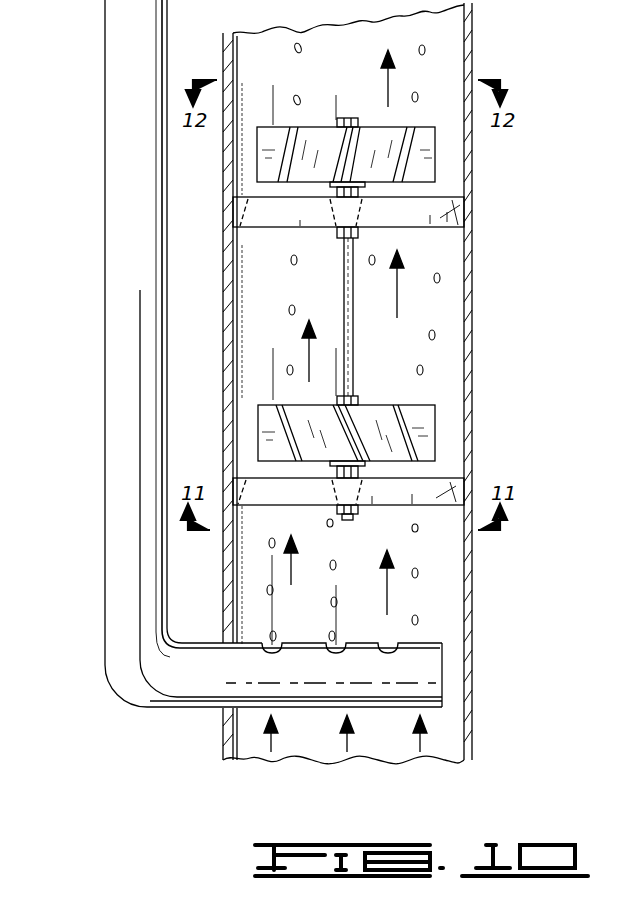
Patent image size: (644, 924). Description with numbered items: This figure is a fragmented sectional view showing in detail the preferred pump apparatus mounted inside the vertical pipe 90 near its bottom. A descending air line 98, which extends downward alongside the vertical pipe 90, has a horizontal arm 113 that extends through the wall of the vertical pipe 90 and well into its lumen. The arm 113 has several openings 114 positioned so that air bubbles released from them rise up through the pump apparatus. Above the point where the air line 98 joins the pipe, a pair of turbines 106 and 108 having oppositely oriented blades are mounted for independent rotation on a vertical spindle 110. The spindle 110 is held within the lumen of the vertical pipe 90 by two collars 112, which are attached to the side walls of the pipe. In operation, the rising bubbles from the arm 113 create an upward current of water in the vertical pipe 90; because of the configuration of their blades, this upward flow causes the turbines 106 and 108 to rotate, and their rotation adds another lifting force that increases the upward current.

The vertical pipe 90 is at (470, 62).
The descending air line 98 is at (120, 200).
The turbine 106 is at (418, 170).
The turbine 108 is at (422, 422).
The vertical spindle 110 is at (349, 347).
The collar 112 is at (470, 203).
The horizontal arm 113 is at (422, 669).
The openings 114 is at (382, 645).